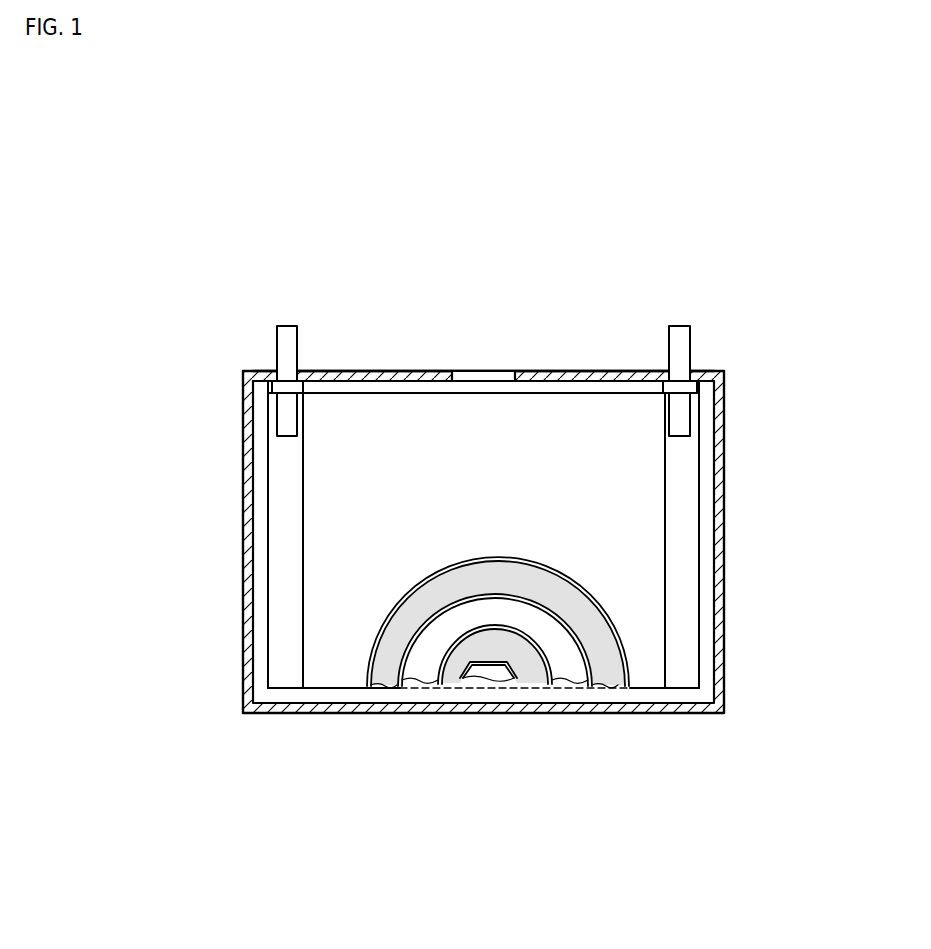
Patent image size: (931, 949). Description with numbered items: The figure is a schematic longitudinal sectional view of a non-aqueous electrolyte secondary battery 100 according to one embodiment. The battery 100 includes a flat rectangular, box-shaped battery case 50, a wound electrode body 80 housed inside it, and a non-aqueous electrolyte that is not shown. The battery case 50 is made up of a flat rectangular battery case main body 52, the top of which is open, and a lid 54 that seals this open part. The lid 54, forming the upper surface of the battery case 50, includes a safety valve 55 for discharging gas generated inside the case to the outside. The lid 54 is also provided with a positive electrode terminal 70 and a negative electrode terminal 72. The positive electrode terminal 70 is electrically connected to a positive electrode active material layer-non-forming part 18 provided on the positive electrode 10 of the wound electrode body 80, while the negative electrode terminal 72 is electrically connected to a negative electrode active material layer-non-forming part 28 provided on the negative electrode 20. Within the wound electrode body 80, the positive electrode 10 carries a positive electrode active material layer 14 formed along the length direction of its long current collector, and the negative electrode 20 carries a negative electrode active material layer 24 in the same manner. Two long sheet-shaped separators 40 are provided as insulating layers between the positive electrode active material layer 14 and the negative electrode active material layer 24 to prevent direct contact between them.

The non-aqueous electrolyte secondary battery 100 is at (493, 500).
The positive electrode 10 is at (483, 686).
The positive electrode active material layer 14 is at (385, 672).
The positive electrode active material layer-non-forming part 18 is at (291, 594).
The negative electrode 20 is at (495, 740).
The negative electrode active material layer 24 is at (452, 668).
The negative electrode active material layer-non-forming part 28 is at (683, 610).
The separator 40 is at (333, 665).
The battery case 50 is at (527, 507).
The battery case main body 52 is at (718, 666).
The lid 54 is at (600, 376).
The safety valve 55 is at (478, 376).
The positive electrode terminal 70 is at (287, 334).
The negative electrode terminal 72 is at (680, 338).
The wound electrode body 80 is at (643, 690).